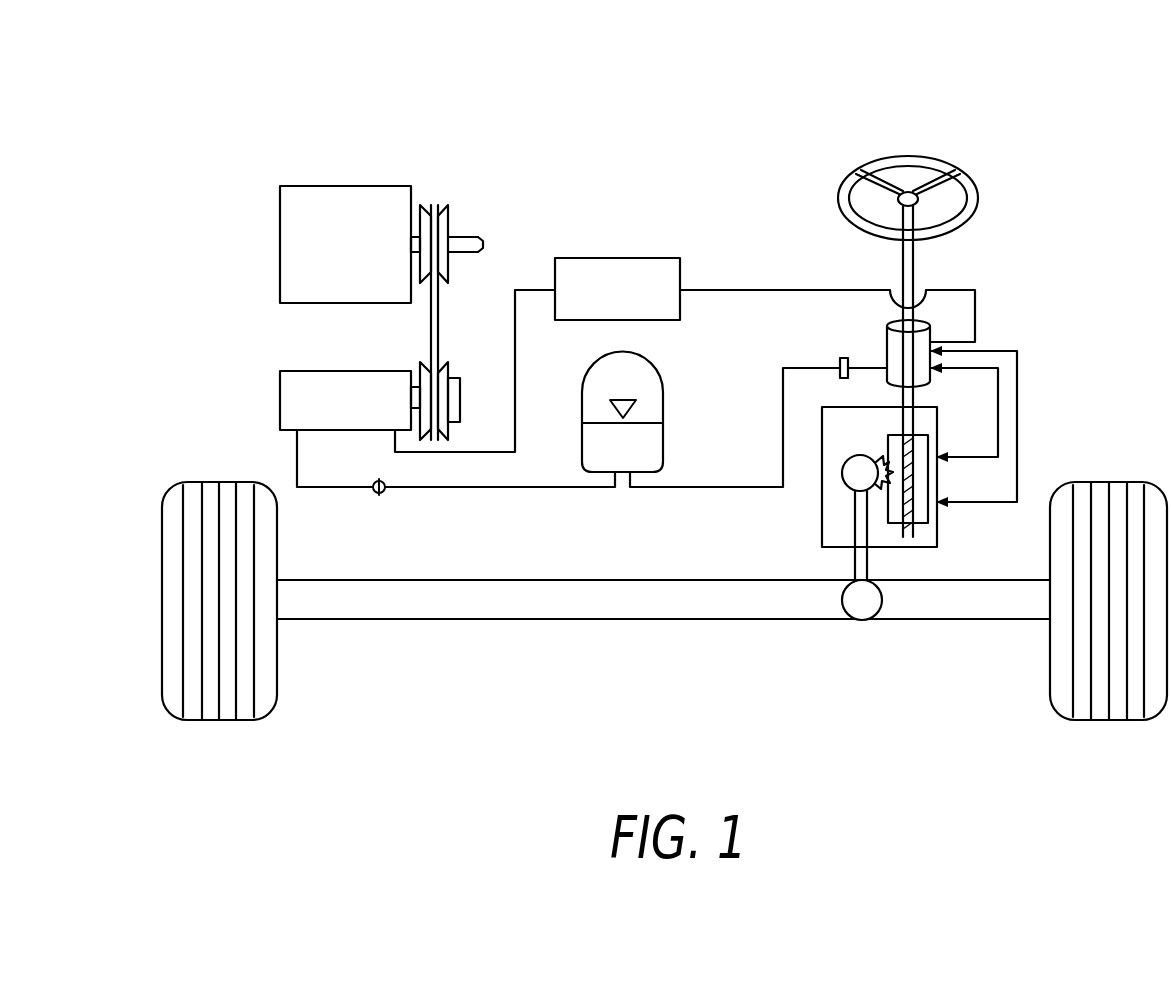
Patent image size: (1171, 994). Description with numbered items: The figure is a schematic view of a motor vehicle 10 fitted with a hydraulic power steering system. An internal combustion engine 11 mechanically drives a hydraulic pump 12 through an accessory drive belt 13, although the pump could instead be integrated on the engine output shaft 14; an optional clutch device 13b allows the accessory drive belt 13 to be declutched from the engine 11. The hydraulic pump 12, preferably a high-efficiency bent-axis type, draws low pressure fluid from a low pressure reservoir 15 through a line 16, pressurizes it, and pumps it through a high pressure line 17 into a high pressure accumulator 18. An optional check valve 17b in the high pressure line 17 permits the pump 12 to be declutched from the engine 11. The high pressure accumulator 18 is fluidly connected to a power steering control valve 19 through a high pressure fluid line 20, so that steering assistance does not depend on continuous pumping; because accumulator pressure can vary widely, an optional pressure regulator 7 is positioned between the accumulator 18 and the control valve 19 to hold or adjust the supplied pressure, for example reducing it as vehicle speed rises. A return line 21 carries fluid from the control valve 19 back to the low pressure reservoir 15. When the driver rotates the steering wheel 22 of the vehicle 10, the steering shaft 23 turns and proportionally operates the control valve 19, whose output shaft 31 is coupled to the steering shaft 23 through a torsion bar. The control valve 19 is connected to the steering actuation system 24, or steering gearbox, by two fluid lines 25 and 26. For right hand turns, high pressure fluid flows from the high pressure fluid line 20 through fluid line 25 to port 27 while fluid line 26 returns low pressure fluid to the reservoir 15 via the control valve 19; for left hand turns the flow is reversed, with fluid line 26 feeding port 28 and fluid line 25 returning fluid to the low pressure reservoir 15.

The motor vehicle 10 is at (692, 115).
The internal combustion engine 11 is at (337, 213).
The hydraulic pump 12 is at (303, 371).
The accessory drive belt 13 is at (440, 310).
The clutch device 13b is at (460, 400).
The engine output shaft 14 is at (470, 233).
The low pressure reservoir 15 is at (647, 265).
The line 16 is at (515, 383).
The high pressure line 17 is at (456, 490).
The check valve 17b is at (374, 494).
The high pressure accumulator 18 is at (664, 398).
The power steering control valve 19 is at (887, 360).
The high pressure fluid line 20 is at (705, 490).
The return line 21 is at (720, 292).
The steering wheel 22 is at (983, 202).
The steering shaft 23 is at (915, 272).
The steering actuation system 24 is at (822, 440).
The fluid line 25 is at (998, 437).
The fluid line 26 is at (1018, 413).
The port 27 is at (940, 462).
The port 28 is at (942, 505).
The output shaft 31 is at (902, 417).
The pressure regulator 7 is at (840, 362).